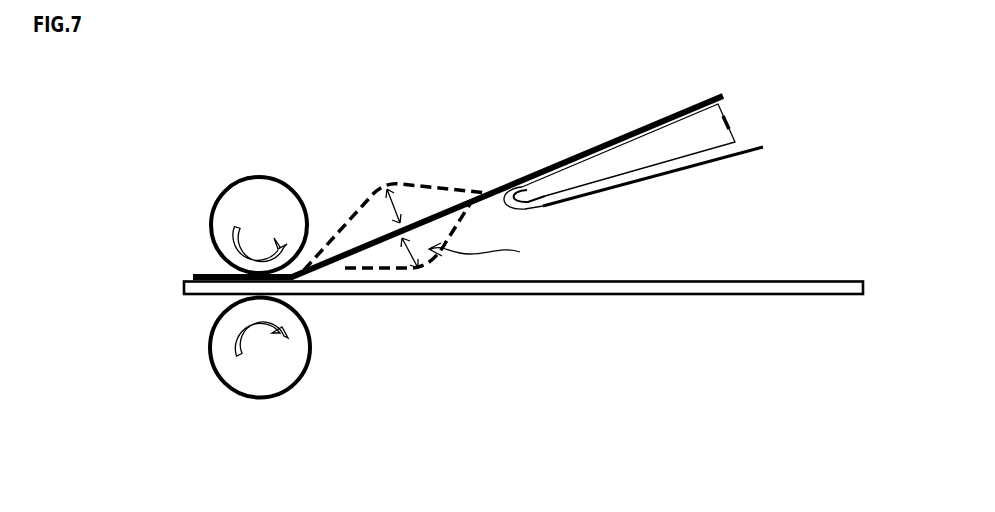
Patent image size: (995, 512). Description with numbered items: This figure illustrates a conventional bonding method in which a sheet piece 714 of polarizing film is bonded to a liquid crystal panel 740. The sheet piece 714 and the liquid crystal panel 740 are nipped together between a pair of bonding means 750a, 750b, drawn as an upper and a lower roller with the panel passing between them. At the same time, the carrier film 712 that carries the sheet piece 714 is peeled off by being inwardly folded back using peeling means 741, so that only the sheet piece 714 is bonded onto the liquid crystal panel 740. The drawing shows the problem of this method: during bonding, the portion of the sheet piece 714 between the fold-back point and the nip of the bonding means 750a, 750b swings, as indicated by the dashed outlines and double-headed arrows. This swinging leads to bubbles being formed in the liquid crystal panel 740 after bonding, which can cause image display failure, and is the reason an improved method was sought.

The carrier film 712 is at (747, 152).
The sheet piece 714 is at (365, 218).
The liquid crystal panel 740 is at (645, 296).
The peeling means 741 is at (731, 124).
The bonding means 750a is at (260, 190).
The bonding means 750b is at (265, 398).